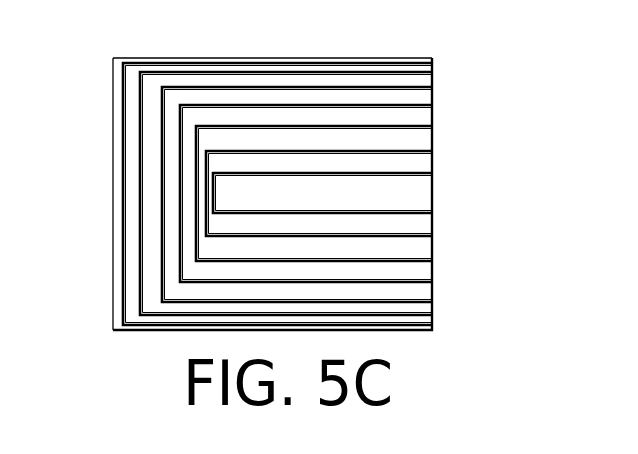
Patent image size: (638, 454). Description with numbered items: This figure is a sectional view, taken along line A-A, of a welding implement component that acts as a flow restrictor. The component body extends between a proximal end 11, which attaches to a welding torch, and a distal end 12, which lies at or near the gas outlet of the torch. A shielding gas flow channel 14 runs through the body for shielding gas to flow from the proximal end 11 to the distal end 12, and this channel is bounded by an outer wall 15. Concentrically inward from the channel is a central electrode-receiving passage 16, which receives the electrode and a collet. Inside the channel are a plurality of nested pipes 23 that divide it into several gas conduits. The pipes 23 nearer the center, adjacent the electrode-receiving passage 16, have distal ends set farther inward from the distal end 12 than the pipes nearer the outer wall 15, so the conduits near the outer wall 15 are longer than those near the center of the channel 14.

The proximal end 11 is at (432, 313).
The distal end 12 is at (113, 292).
The shielding gas flow channel 14 is at (225, 134).
The outer wall 15 is at (272, 61).
The electrode-receiving passage 16 is at (405, 192).
The nested pipes 23 is at (413, 95).